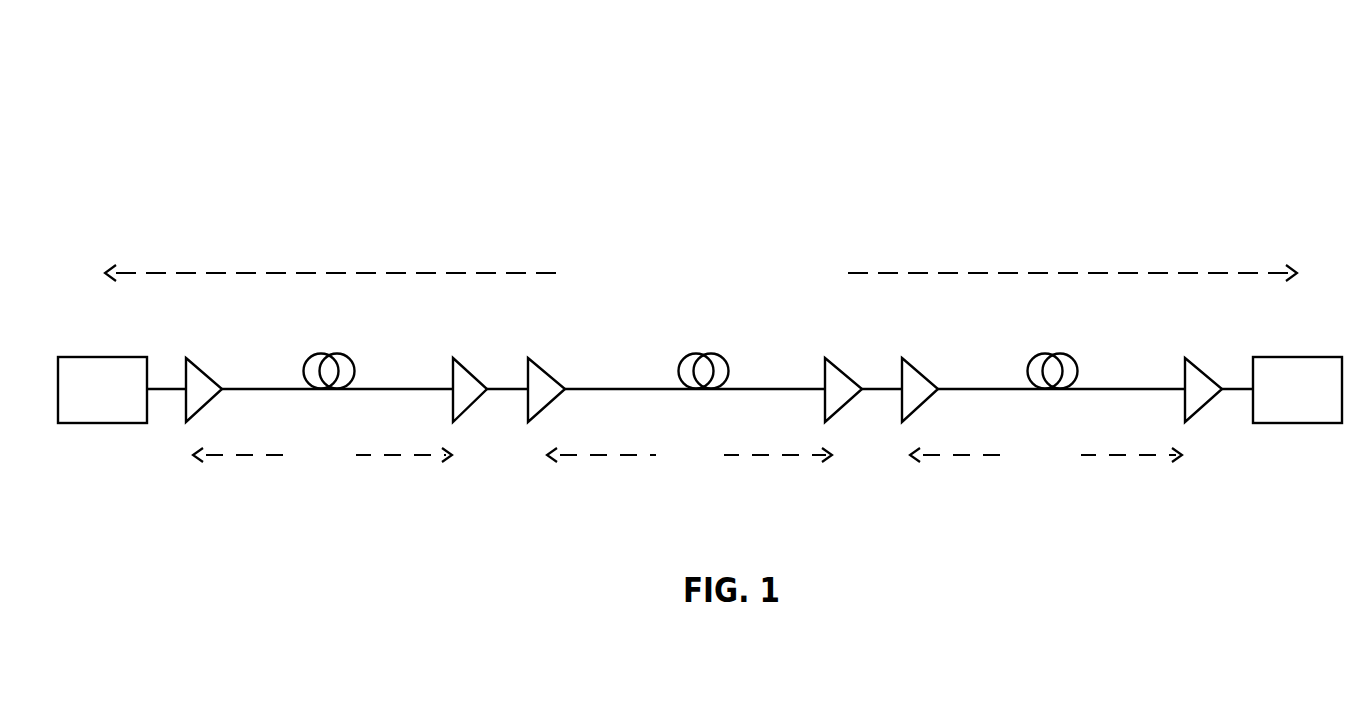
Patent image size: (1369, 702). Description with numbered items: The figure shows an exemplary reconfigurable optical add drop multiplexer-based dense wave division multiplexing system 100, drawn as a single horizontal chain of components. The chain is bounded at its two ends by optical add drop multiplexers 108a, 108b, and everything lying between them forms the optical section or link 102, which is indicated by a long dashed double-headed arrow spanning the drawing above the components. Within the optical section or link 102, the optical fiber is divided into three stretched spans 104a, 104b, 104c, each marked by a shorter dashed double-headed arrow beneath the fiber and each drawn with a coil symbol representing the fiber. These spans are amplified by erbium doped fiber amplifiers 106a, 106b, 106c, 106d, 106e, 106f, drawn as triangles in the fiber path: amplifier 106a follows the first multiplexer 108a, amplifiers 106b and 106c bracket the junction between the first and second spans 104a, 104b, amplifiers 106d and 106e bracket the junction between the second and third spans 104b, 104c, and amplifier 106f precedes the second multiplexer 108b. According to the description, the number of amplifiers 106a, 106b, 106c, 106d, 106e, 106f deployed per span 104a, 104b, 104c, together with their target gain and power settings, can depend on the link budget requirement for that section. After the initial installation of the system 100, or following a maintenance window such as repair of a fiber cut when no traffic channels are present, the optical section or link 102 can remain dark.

The reconfigurable optical add drop multiplexer-based DWDM system 100 is at (678, 223).
The optical section or link 102 is at (692, 260).
The span of optical fiber 104a is at (322, 471).
The span of optical fiber 104b is at (690, 471).
The span of optical fiber 104c is at (1052, 471).
The erbium doped fiber amplifier 106a is at (194, 357).
The erbium doped fiber amplifier 106b is at (456, 359).
The erbium doped fiber amplifier 106c is at (535, 358).
The erbium doped fiber amplifier 106d is at (828, 359).
The erbium doped fiber amplifier 106e is at (909, 360).
The erbium doped fiber amplifier 106f is at (1188, 359).
The optical add drop multiplexer 108a is at (103, 356).
The optical add drop multiplexer 108b is at (1290, 356).